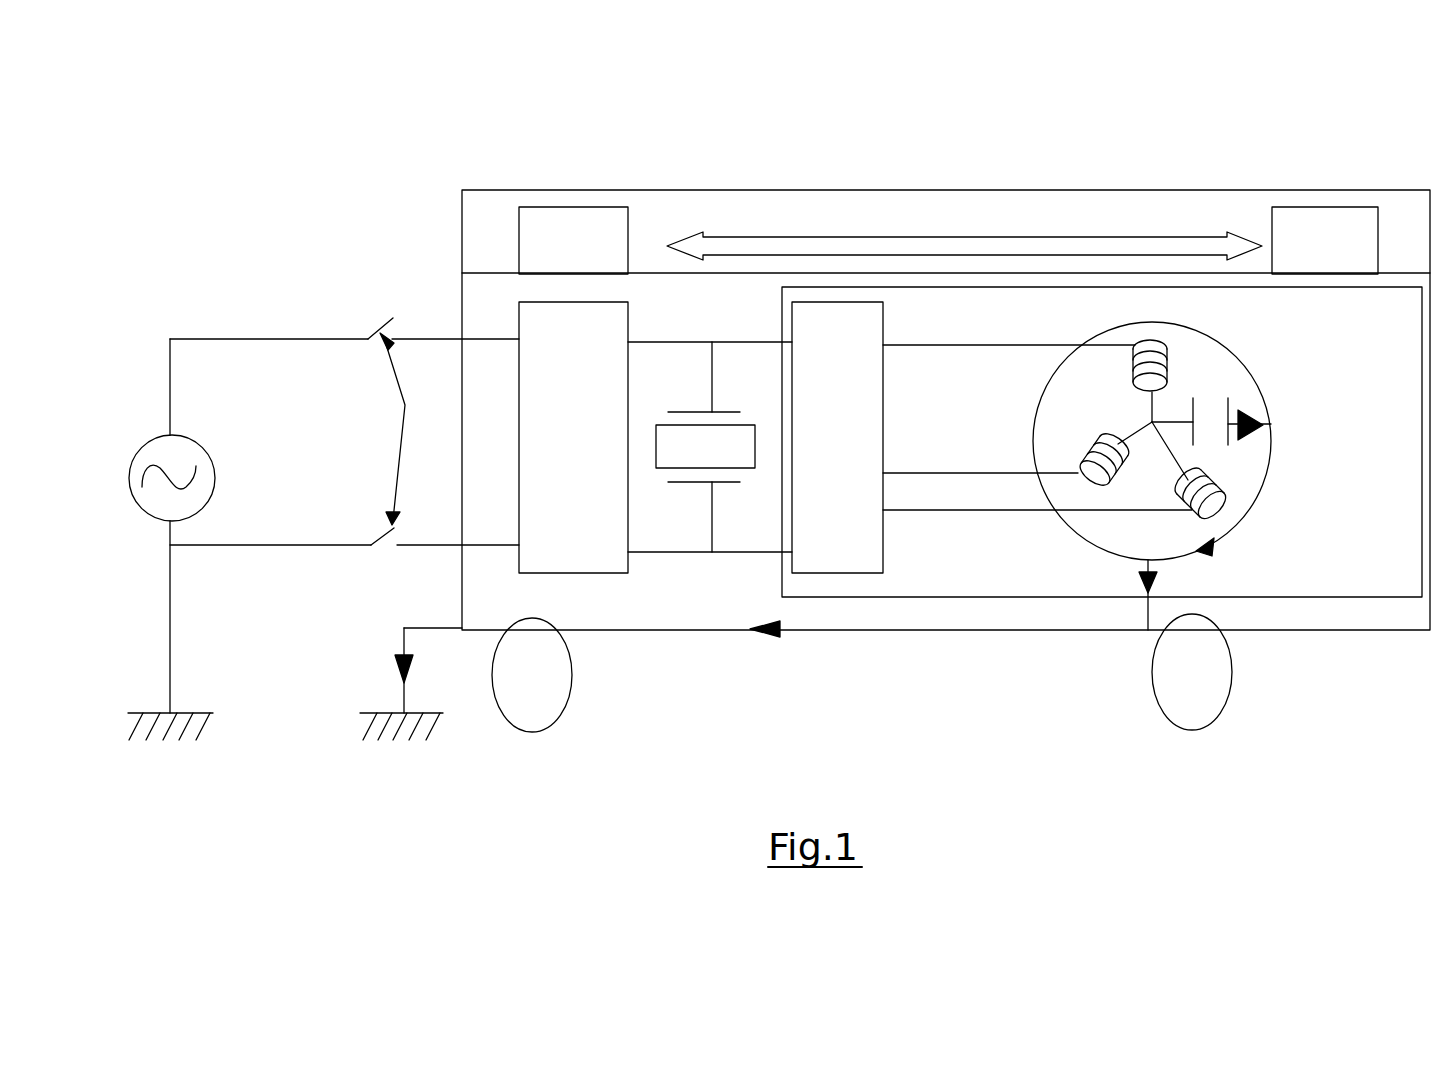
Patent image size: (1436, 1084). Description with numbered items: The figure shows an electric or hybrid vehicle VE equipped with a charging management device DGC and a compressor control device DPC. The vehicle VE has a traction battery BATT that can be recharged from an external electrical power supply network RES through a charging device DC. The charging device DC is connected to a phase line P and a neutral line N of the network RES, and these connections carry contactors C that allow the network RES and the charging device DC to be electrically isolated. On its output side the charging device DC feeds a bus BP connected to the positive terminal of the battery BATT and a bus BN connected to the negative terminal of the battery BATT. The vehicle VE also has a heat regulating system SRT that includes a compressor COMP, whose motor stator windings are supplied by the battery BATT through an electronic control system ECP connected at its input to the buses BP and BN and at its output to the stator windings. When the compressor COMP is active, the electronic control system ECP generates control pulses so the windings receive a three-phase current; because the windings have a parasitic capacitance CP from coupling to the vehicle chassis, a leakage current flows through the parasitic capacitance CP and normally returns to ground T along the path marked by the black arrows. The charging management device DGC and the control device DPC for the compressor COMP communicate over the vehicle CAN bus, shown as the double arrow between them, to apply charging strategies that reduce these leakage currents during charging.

The electric or hybrid vehicle VE is at (1160, 190).
The charging management device DGC is at (573, 240).
The control device for the compressor DPC is at (1325, 240).
The charging device DC is at (573, 437).
The electronic control system of the compressor ECP is at (837, 437).
The traction battery BATT is at (705, 447).
The bus BP is at (648, 342).
The bus BN is at (644, 553).
The compressor COMP is at (1233, 343).
The parasitic capacitance CP is at (1250, 426).
The heat regulating system SRT is at (952, 597).
The external electrical power supply network RES is at (182, 440).
The phase line P is at (316, 339).
The neutral line N is at (340, 545).
The contactors C is at (397, 431).
The ground T is at (404, 628).